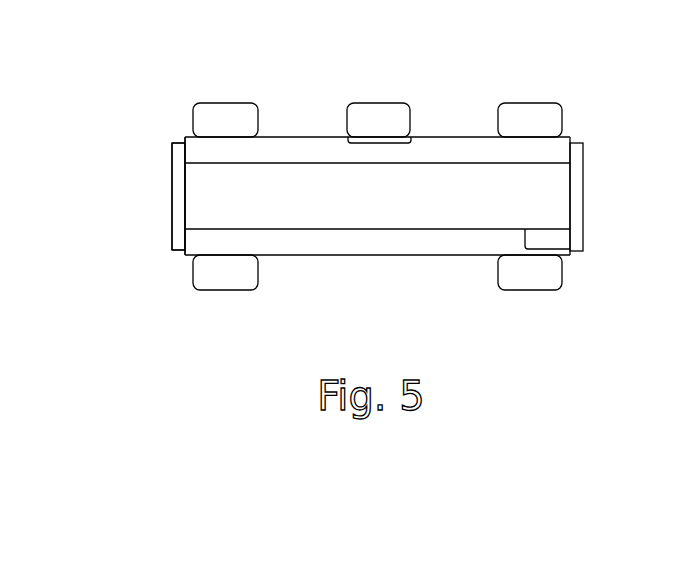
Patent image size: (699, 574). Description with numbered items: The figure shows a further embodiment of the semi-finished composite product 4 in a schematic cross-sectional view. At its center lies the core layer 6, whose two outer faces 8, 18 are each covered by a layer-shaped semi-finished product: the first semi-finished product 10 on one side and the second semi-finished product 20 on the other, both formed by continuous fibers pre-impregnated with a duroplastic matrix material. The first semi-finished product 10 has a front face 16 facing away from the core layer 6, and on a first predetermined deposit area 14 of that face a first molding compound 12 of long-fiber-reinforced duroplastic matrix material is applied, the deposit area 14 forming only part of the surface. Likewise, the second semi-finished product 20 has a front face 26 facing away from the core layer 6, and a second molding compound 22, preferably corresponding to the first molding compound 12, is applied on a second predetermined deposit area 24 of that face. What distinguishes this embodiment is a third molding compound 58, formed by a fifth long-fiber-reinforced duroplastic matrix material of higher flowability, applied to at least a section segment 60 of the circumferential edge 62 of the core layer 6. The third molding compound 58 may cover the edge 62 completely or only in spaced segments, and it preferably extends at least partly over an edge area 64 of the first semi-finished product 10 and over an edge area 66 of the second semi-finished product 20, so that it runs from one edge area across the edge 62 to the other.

The semi-finished composite product 4 is at (592, 76).
The core layer 6 is at (563, 181).
The outer face of the core layer 8 is at (288, 170).
The first semi-finished product 10 is at (571, 135).
The first molding compound 12 is at (382, 100).
The first predetermined deposit area 14 is at (378, 144).
The front face of the first semi-finished product 16 is at (305, 128).
The outer face of the core layer 18 is at (442, 222).
The second semi-finished product 20 is at (568, 236).
The second molding compound 22 is at (229, 302).
The second predetermined deposit area 24 is at (524, 232).
The front face of the second semi-finished product 26 is at (397, 272).
The third molding compound 58 is at (166, 199).
The section segment 60 is at (185, 195).
The circumferential edge 62 is at (175, 182).
The edge area of the first semi-finished product 64 is at (177, 153).
The edge area of the second semi-finished product 66 is at (175, 243).